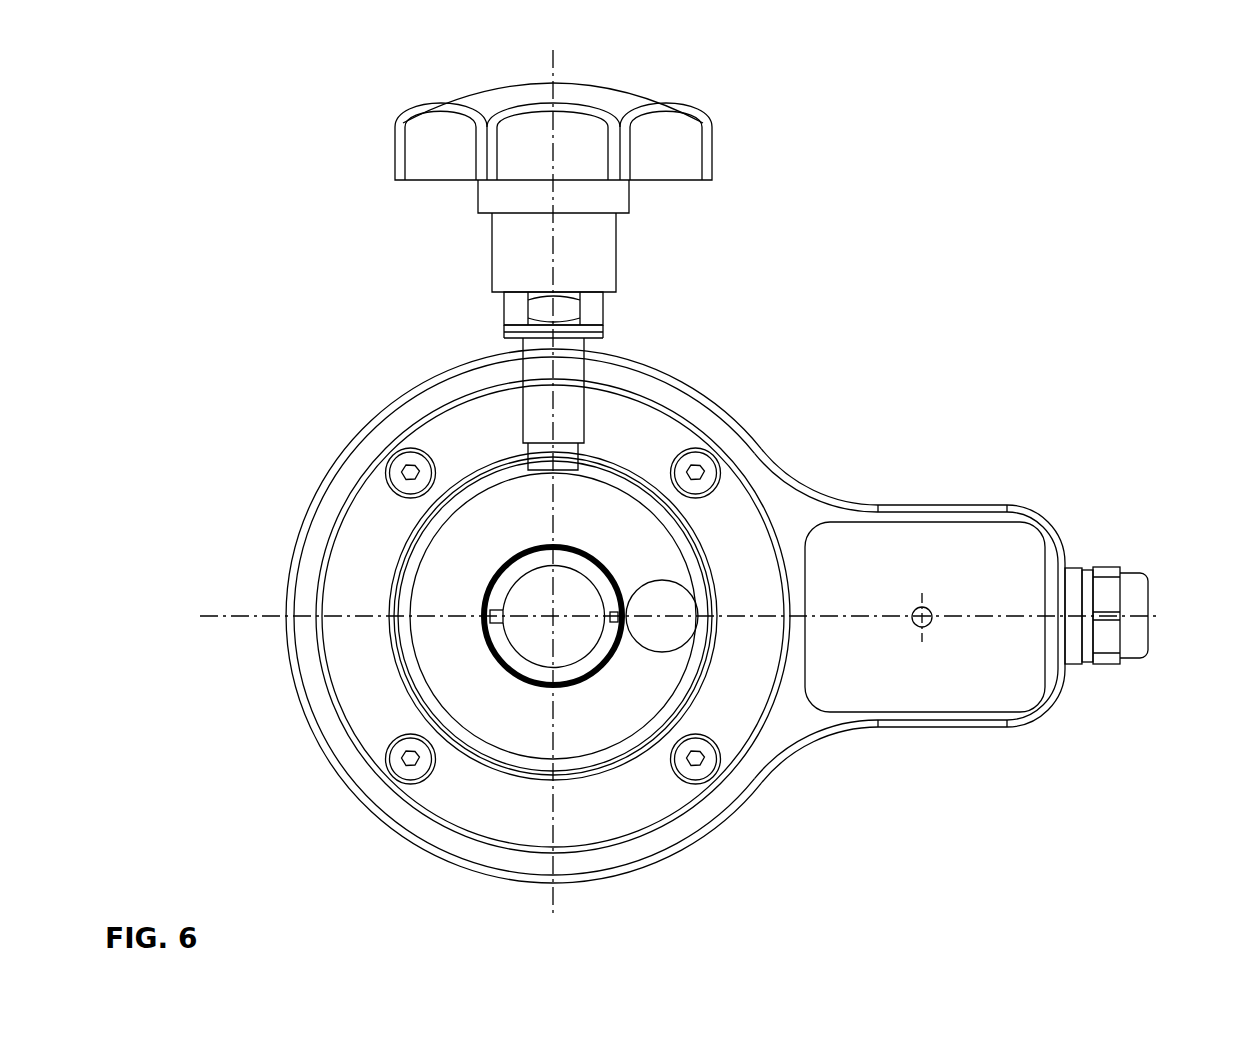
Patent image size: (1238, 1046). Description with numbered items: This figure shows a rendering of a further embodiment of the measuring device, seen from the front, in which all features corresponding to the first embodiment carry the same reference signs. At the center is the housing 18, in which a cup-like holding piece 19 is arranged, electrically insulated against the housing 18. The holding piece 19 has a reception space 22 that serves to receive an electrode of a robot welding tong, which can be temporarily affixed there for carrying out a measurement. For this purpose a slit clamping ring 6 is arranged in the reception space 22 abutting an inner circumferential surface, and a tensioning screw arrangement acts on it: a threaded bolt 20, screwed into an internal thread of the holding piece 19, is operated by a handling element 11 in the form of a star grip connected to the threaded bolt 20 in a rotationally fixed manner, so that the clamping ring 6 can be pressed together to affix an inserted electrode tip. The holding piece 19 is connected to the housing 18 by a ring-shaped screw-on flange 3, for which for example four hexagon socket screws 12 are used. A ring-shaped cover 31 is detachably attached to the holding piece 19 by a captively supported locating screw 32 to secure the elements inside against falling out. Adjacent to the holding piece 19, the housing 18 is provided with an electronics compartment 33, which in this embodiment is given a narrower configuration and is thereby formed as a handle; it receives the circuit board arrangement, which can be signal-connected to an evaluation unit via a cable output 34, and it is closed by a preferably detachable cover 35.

The screw-on flange 3 is at (655, 420).
The clamping ring 6 is at (532, 672).
The handling element 11 is at (688, 156).
The hexagon socket screws 12 is at (403, 467).
The housing 18 is at (654, 356).
The holding piece 19 is at (390, 658).
The threaded bolt 20 is at (535, 407).
The reception space 22 is at (533, 588).
The cover 31 is at (443, 593).
The locating screw 32 is at (668, 600).
The electronics compartment 33 is at (905, 505).
The cable output 34 is at (1120, 650).
The cover 35 is at (958, 537).